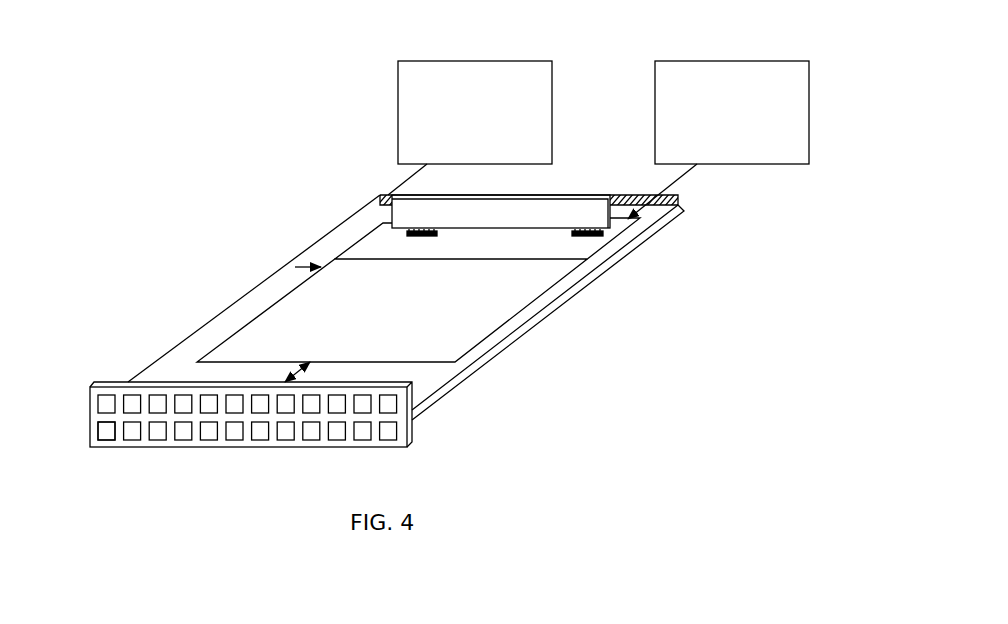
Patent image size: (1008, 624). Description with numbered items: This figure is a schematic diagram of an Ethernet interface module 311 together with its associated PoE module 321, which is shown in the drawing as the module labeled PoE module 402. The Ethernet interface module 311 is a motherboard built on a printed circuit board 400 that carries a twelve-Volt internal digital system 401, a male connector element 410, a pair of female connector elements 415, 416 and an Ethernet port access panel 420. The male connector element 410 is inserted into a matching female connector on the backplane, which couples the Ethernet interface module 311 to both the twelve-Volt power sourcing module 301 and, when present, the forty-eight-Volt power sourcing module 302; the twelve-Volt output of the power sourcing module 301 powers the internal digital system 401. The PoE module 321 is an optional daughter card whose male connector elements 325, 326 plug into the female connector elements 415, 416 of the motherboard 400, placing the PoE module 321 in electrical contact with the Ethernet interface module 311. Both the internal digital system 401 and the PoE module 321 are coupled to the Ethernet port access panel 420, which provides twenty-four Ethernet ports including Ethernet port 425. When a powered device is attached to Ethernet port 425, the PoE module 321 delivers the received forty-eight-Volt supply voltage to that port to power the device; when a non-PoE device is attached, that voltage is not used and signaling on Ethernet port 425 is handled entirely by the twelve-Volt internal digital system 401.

The 12-Volt power sourcing module 301 is at (493, 69).
The 48-Volt power sourcing module 302 is at (743, 69).
The Ethernet interface module 311 is at (209, 302).
The PoE module 321 is at (603, 147).
The male connector element 325 is at (417, 236).
The male connector element 326 is at (578, 237).
The printed circuit board 400 is at (486, 364).
The internal digital system 401 is at (398, 333).
The POE module 402 is at (506, 253).
The male connector element 410 is at (678, 200).
The female connector element 415 is at (425, 237).
The female connector element 416 is at (586, 237).
The Ethernet port access panel 420 is at (410, 443).
The Ethernet port 425 is at (107, 427).